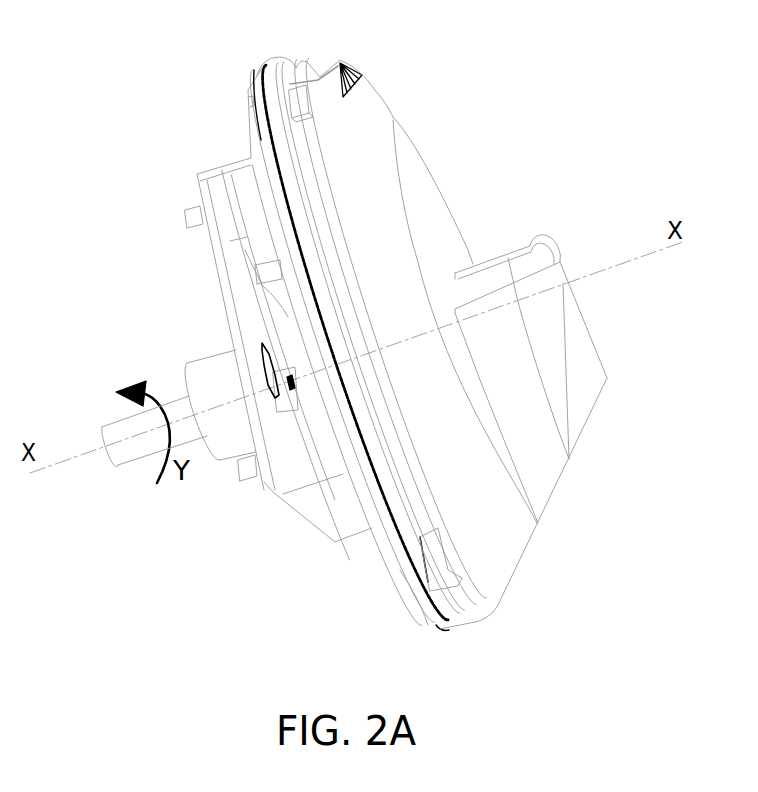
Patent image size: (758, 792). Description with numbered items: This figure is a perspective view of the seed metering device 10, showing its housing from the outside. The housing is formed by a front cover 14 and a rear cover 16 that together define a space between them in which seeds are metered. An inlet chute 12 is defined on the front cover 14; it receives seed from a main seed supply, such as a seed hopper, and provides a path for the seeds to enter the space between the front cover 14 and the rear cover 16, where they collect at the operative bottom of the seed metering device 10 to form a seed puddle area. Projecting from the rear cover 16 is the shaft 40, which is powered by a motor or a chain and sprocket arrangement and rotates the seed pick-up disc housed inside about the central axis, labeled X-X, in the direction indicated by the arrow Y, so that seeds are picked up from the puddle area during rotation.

The seed metering device 10 is at (505, 130).
The inlet chute 12 is at (563, 337).
The front cover 14 is at (350, 120).
The rear cover 16 is at (253, 127).
The shaft 40 is at (130, 452).